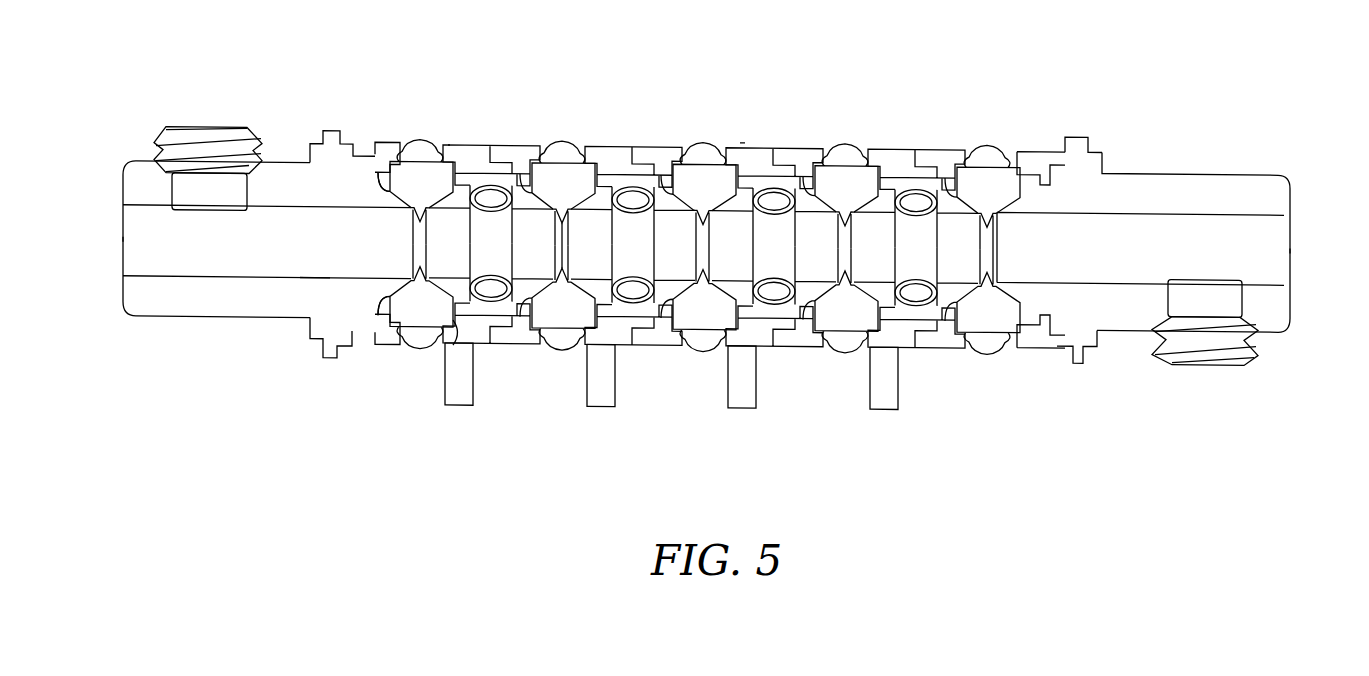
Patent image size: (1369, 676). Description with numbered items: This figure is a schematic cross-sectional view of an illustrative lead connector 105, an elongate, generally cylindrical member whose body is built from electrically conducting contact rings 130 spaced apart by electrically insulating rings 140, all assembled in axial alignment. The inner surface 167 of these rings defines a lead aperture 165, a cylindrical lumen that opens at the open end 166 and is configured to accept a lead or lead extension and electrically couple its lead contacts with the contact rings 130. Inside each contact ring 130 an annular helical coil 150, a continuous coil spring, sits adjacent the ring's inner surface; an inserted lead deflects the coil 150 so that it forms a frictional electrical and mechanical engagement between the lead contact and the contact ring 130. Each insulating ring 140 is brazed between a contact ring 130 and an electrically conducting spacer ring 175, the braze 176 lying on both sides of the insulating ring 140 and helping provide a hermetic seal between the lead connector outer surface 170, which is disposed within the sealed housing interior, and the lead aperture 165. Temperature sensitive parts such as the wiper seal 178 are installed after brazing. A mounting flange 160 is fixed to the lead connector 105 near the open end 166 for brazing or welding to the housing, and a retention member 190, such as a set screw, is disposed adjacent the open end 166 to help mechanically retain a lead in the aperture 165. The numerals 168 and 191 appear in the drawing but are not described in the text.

The lead connector 105 is at (761, 92).
The electrically conducting contact ring 130 is at (474, 403).
The electrically insulating ring 140 is at (420, 148).
The annular helical coil 150 is at (488, 302).
The mounting flange 160 is at (332, 129).
The lead aperture 165 is at (110, 300).
The open end 166 is at (126, 181).
The inner surface 167 is at (300, 276).
The right end wall 168 is at (1291, 322).
The lead connector outer surface 170 is at (471, 118).
The electrically conducting spacer ring 175 is at (378, 143).
The braze 176 is at (377, 300).
The wiper seal 178 is at (563, 288).
The retention member 190 is at (208, 126).
The threaded outlet fitting 191 is at (1205, 368).